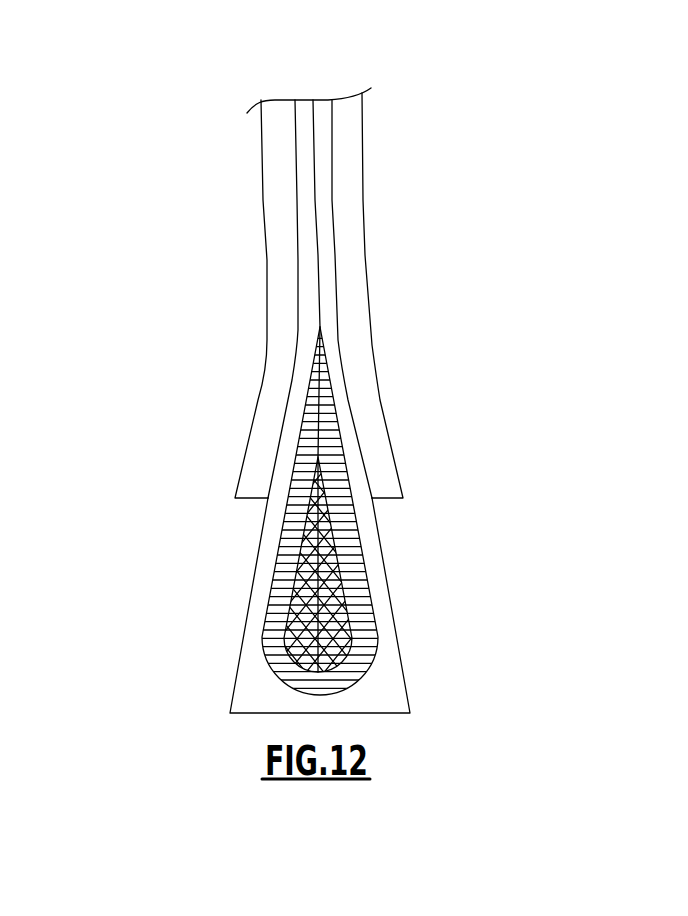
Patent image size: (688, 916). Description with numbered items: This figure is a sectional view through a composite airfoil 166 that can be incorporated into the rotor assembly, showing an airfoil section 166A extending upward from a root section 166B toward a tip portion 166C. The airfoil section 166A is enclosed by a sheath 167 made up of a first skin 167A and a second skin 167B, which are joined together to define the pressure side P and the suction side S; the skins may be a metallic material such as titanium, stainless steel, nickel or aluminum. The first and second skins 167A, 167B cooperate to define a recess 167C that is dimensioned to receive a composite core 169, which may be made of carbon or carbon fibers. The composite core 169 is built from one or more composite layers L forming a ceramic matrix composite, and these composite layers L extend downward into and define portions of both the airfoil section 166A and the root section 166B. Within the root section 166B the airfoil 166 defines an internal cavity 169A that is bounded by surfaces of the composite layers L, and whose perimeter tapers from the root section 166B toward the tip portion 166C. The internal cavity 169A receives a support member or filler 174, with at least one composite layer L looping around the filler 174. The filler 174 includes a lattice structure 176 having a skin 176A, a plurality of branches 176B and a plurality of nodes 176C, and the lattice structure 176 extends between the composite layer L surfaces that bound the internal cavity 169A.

The composite airfoil 166 is at (232, 75).
The airfoil section 166A is at (233, 222).
The root section 166B is at (167, 631).
The tip portion 166C is at (347, 92).
The sheath 167 is at (266, 293).
The first skin 167A is at (251, 299).
The second skin 167B is at (370, 326).
The recess 167C is at (331, 132).
The composite core 169 is at (349, 292).
The internal cavity 169A is at (338, 549).
The filler 174 is at (357, 580).
The lattice structure 176 is at (315, 560).
The skin 176A is at (348, 563).
The branches 176B is at (295, 566).
The nodes 176C is at (293, 601).
The composite layers L is at (298, 107).
The pressure side P is at (262, 155).
The suction side S is at (363, 173).